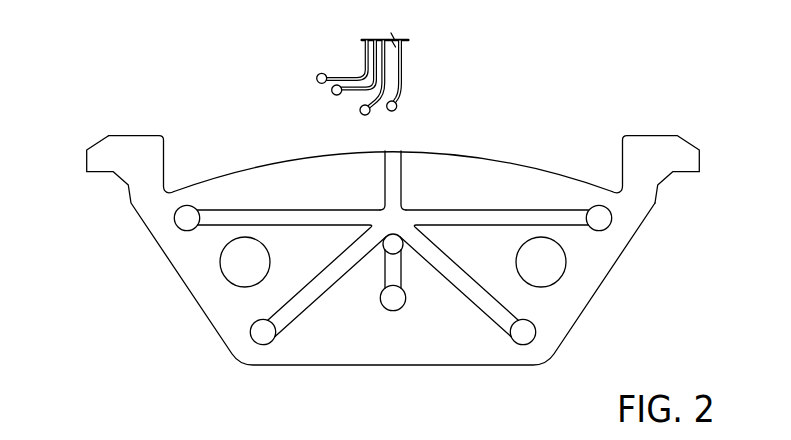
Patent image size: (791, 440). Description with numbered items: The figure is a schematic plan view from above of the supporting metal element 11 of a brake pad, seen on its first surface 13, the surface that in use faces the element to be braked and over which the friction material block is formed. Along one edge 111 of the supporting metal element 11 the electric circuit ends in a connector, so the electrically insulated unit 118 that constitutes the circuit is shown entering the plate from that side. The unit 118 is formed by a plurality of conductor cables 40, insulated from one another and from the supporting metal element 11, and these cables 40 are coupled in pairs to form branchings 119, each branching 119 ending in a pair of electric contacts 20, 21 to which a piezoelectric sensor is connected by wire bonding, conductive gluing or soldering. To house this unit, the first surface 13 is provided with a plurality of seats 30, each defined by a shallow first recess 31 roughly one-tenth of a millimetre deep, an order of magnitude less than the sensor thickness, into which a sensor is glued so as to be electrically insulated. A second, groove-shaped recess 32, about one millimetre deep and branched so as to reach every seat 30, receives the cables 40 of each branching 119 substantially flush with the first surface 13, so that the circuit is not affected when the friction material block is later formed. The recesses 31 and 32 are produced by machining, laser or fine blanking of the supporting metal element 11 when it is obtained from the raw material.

The supporting metal element 11 is at (620, 270).
The first surface 13 is at (510, 180).
The edge 111 is at (633, 150).
The seat 30 is at (178, 227).
The first recess 31 is at (377, 310).
The second groove-shaped recess 32 is at (414, 202).
The electrically insulated unit 118 is at (425, 30).
The conductor cables 40 is at (363, 55).
The branching 119 is at (352, 83).
The electric contact 20 is at (332, 88).
The electric contact 21 is at (317, 75).